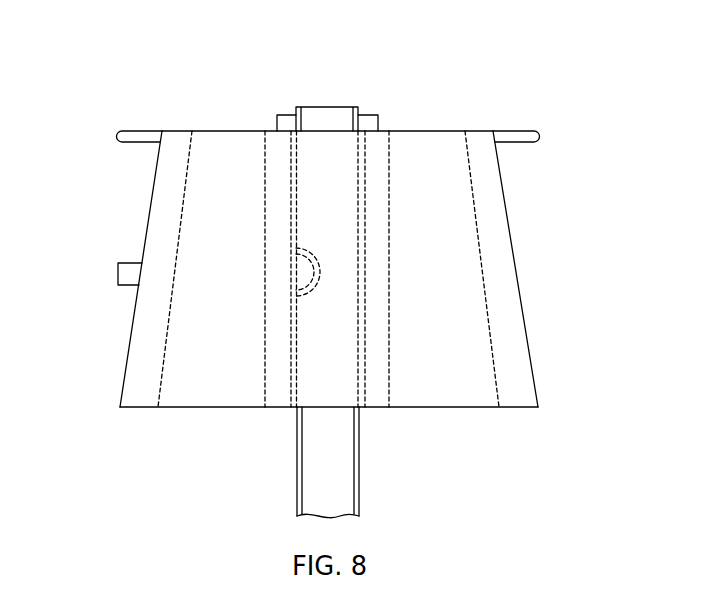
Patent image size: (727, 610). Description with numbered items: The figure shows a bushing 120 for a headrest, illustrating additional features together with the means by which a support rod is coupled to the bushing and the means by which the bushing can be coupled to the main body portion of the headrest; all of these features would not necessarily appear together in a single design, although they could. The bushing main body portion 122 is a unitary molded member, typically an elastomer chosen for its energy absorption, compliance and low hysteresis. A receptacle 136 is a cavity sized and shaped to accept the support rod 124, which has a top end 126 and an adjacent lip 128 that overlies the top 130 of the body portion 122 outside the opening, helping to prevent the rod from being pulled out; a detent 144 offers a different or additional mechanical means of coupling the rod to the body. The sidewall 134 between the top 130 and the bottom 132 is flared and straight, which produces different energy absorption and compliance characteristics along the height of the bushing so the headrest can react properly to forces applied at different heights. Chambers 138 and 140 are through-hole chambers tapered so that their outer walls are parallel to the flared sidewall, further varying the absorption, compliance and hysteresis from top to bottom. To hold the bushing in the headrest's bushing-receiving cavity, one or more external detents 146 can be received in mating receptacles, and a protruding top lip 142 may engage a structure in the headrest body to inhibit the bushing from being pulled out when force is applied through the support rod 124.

The bushing 120 is at (140, 198).
The bushing main body portion 122 is at (488, 193).
The support rod 124 is at (353, 498).
The top end 126 is at (332, 107).
The lip 128 is at (285, 115).
The top 130 is at (177, 130).
The bottom 132 is at (137, 409).
The sidewall 134 is at (129, 345).
The receptacle 136 is at (368, 392).
The chamber 138 is at (477, 392).
The chamber 140 is at (213, 393).
The protruding top lip 142 is at (513, 130).
The detent 144 is at (305, 243).
The external detent 146 is at (118, 274).